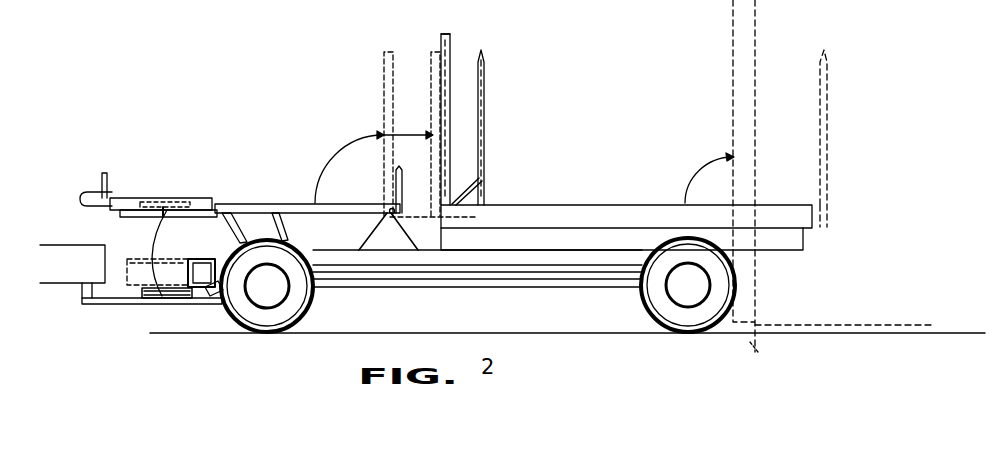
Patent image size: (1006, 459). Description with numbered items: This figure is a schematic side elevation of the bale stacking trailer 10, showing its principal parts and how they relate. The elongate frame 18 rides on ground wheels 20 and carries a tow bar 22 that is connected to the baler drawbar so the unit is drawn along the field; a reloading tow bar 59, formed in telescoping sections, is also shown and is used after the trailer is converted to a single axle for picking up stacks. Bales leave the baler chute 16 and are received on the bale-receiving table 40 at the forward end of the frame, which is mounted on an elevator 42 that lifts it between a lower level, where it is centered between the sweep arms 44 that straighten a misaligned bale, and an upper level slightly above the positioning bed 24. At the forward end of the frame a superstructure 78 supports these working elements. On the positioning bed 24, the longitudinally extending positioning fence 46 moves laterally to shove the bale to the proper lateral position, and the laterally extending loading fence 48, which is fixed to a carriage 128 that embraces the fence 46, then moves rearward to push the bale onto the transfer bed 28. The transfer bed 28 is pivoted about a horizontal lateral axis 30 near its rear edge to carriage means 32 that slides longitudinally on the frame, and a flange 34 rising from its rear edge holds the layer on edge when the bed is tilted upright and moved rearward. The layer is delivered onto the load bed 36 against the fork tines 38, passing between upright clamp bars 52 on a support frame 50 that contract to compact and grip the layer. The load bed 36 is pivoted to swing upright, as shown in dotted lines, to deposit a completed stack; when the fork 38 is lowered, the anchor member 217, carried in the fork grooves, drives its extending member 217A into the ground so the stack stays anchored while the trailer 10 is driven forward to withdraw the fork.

The trailer 10 is at (438, 294).
The baler chute 16 is at (67, 277).
The elongate frame 18 is at (528, 266).
The ground wheels 20 is at (314, 306).
The tow bar 22 is at (111, 313).
The positioning bed 24 is at (111, 210).
The transfer bed 28 is at (283, 204).
The horizontal lateral axis 30 is at (391, 209).
The carriage means 32 is at (369, 239).
The flange 34 is at (397, 182).
The load bed 36 is at (574, 212).
The tines (load fork) 38 is at (485, 137).
The bale-receiving table 40 is at (157, 299).
The elevator 42 is at (211, 294).
The sweep arms 44 is at (199, 259).
The positioning fence 46 is at (140, 202).
The loading fence 48 is at (108, 172).
The support frame 50 is at (452, 30).
The clamp bars 52 is at (451, 83).
The reloading tow bar 59 is at (494, 289).
The superstructure 78 is at (229, 226).
The carriage 128 is at (81, 197).
The anchor member 217 is at (468, 184).
The extending member 217A is at (758, 345).